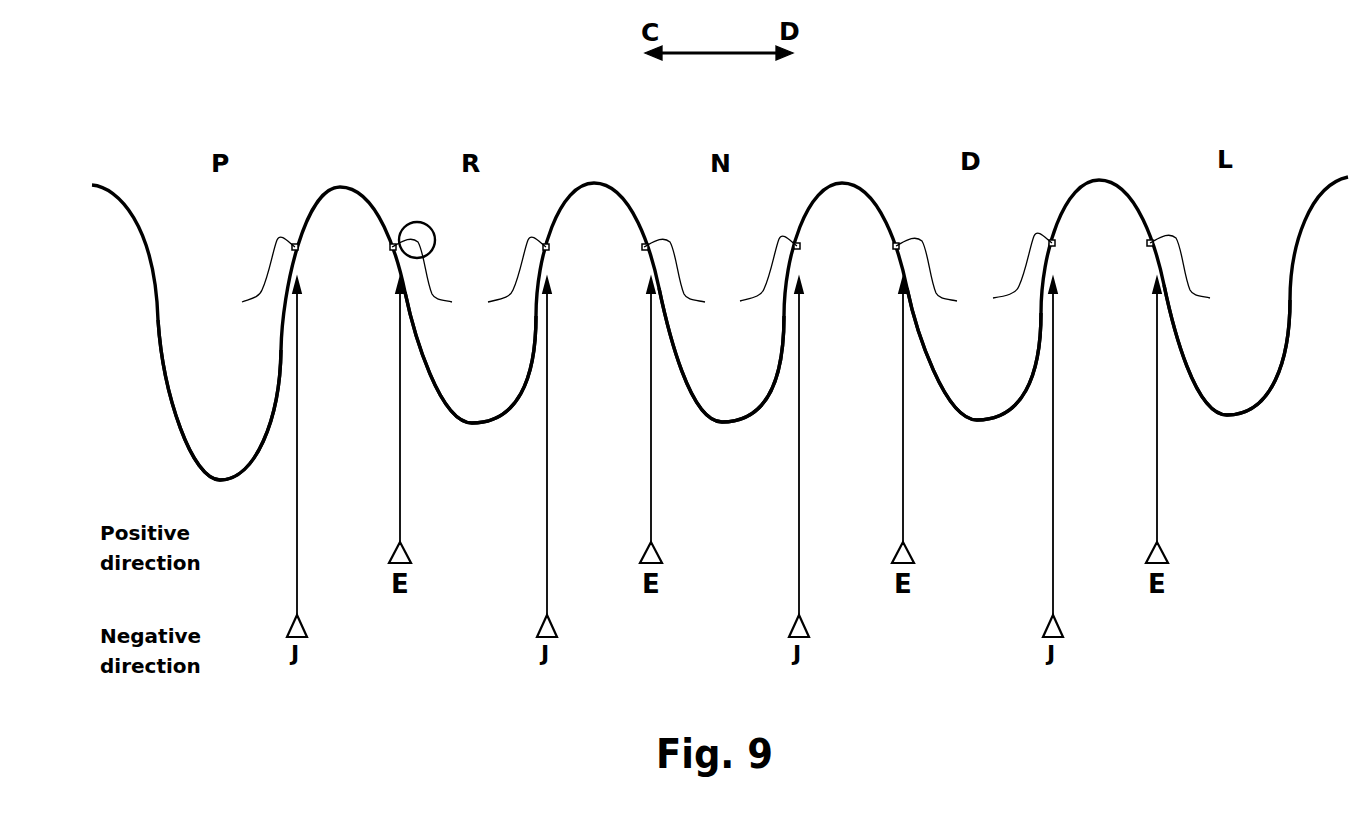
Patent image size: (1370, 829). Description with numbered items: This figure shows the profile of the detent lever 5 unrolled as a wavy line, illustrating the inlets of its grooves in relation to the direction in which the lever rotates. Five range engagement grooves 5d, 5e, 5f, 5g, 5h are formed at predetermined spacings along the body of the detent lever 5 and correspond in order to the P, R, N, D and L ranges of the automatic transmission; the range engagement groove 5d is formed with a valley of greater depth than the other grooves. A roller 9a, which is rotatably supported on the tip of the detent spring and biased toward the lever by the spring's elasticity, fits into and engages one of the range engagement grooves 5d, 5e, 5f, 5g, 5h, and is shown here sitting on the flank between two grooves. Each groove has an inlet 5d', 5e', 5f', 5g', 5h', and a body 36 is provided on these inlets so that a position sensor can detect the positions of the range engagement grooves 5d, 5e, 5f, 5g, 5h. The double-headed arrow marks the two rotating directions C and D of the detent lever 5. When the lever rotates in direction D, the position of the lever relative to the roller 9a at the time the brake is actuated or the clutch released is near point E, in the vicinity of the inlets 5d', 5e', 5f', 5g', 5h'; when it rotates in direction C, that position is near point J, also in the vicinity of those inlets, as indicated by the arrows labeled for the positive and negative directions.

The detent lever 5 is at (1118, 165).
The range engagement groove 5d is at (219, 400).
The range engagement groove 5e is at (470, 357).
The range engagement groove 5f is at (721, 355).
The range engagement groove 5g is at (974, 354).
The range engagement groove 5h is at (1227, 350).
The inlet 5d' is at (249, 274).
The inlet 5e' is at (469, 274).
The inlet 5f' is at (720, 274).
The inlet 5g' is at (974, 271).
The inlet 5h' is at (1199, 271).
The roller 9a is at (413, 222).
The body 36 is at (392, 247).